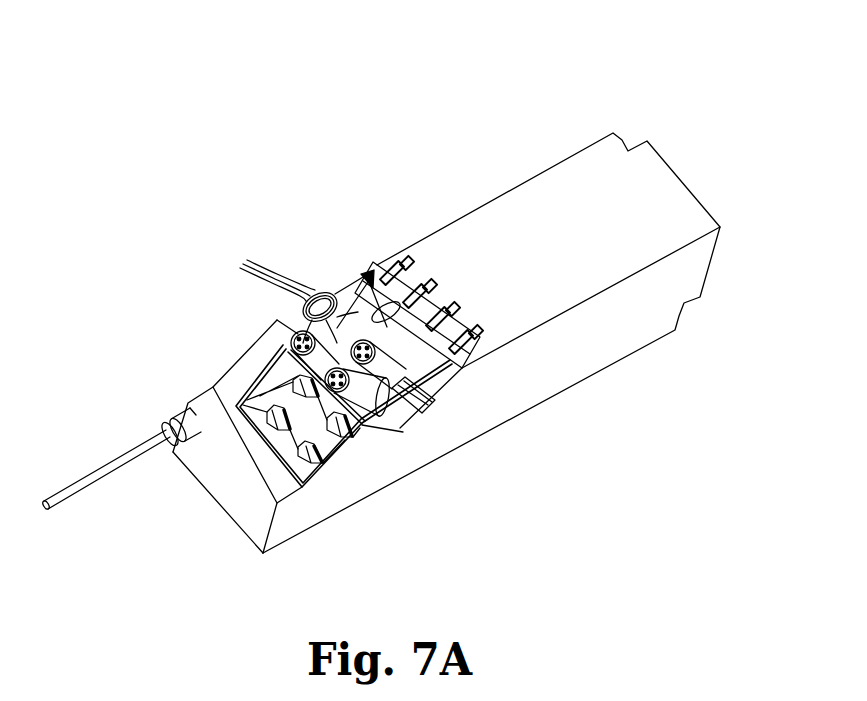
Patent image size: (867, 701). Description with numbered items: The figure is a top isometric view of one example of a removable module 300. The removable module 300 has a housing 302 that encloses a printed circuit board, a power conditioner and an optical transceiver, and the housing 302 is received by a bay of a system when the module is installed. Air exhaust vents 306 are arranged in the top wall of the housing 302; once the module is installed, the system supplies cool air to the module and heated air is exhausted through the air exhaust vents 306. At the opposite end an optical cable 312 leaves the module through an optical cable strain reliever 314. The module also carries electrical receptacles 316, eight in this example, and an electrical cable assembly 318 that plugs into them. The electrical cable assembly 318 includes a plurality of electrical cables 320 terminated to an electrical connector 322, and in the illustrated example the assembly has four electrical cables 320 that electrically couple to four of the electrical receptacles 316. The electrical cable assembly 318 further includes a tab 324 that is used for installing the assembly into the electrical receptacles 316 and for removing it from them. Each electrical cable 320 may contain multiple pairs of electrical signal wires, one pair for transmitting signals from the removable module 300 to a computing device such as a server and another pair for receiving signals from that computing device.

The removable module 300 is at (492, 48).
The housing 302 is at (502, 190).
The air exhaust vents 306 is at (394, 270).
The optical cable 312 is at (53, 494).
The optical cable strain reliever 314 is at (179, 423).
The electrical receptacles 316 is at (433, 378).
The electrical cable assembly 318 is at (370, 276).
The electrical cables 320 is at (273, 272).
The electrical connector 322 is at (460, 368).
The tab 324 is at (340, 285).